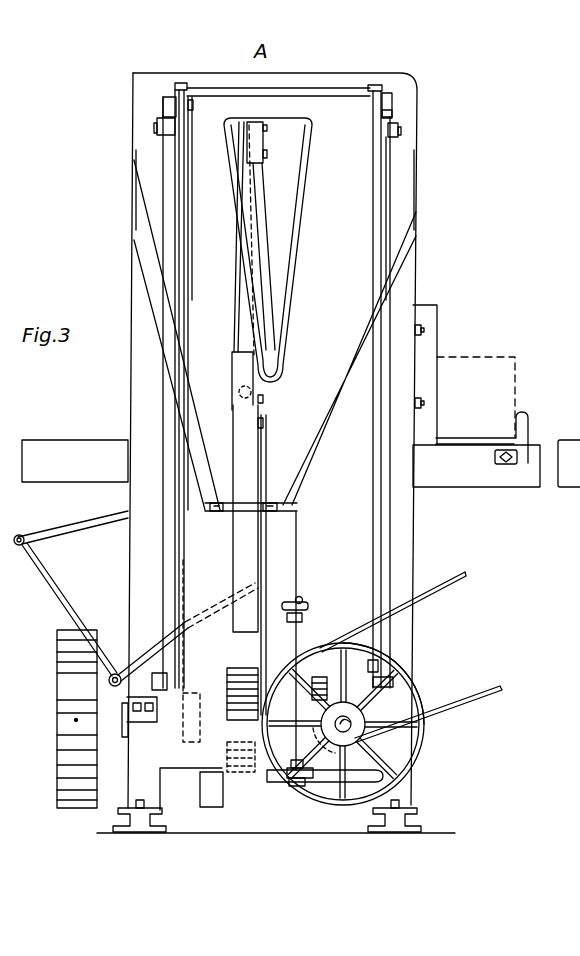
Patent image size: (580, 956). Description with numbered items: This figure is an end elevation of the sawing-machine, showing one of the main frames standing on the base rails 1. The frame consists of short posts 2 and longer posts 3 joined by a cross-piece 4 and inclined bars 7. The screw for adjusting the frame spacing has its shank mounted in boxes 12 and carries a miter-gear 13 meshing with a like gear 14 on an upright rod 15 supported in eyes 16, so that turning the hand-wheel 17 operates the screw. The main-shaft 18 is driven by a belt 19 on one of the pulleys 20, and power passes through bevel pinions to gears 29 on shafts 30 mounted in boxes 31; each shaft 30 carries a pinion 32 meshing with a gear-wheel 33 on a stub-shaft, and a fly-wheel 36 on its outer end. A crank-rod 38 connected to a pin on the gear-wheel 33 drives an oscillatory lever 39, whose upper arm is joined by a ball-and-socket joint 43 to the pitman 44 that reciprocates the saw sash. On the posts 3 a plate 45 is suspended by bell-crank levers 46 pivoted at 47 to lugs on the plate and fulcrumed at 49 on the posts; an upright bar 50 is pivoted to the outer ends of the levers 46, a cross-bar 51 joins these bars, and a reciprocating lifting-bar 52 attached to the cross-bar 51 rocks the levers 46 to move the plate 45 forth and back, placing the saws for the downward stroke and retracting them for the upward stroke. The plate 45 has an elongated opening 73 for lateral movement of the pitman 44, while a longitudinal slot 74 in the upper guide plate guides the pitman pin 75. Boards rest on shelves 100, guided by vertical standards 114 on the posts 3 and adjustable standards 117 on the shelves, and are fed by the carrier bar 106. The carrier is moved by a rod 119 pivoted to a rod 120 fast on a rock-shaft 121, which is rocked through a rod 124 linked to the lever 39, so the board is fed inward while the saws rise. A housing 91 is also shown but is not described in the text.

The T-shaped bars or rails 1 is at (141, 833).
The short posts 2 is at (160, 806).
The longer posts 3 is at (418, 230).
The cross-piece 4 is at (200, 78).
The inclined bars 7 is at (385, 288).
The boxes 12 is at (277, 777).
The miter-gear 13 is at (287, 790).
The miter-gear 14 is at (307, 785).
The upright rod 15 is at (298, 632).
The eyes 16 is at (303, 625).
The hand-wheel 17 is at (288, 601).
The main-shaft 18 is at (392, 712).
The belt 19 is at (464, 576).
The pulleys 20 is at (425, 720).
The gears 29 is at (362, 672).
The shafts 30 is at (108, 732).
The boxes 31 is at (123, 712).
The pinion 32 is at (228, 700).
The gear-wheel 33 is at (242, 772).
The fly-wheel 36 is at (84, 812).
The crank-rods 38 is at (263, 494).
The oscillatory levers 39 is at (242, 435).
The ball-and-socket joints 43 is at (250, 393).
The pitmen 44 is at (242, 316).
The plate 45 is at (335, 107).
The bell-crank levers 46 is at (165, 110).
The pivotal connection 47 is at (393, 107).
The fulcrum 49 is at (157, 125).
The upright bar 50 is at (382, 153).
The cross-bar 51 is at (285, 93).
The reciprocating lifting-bar 52 is at (188, 192).
The vertically elongated opening 73 is at (298, 195).
The longitudinal slot 74 is at (300, 232).
The pitman pin 75 is at (262, 140).
The housing 91 is at (483, 356).
The shelves 100 is at (40, 442).
The board-engaging device 106 is at (480, 438).
The vertical standards or guides 114 is at (437, 330).
The adjustable standards 117 is at (527, 423).
The rod 119 is at (58, 526).
The rod 120 is at (47, 575).
The rock-shaft 121 is at (112, 688).
The rod 124 is at (150, 652).